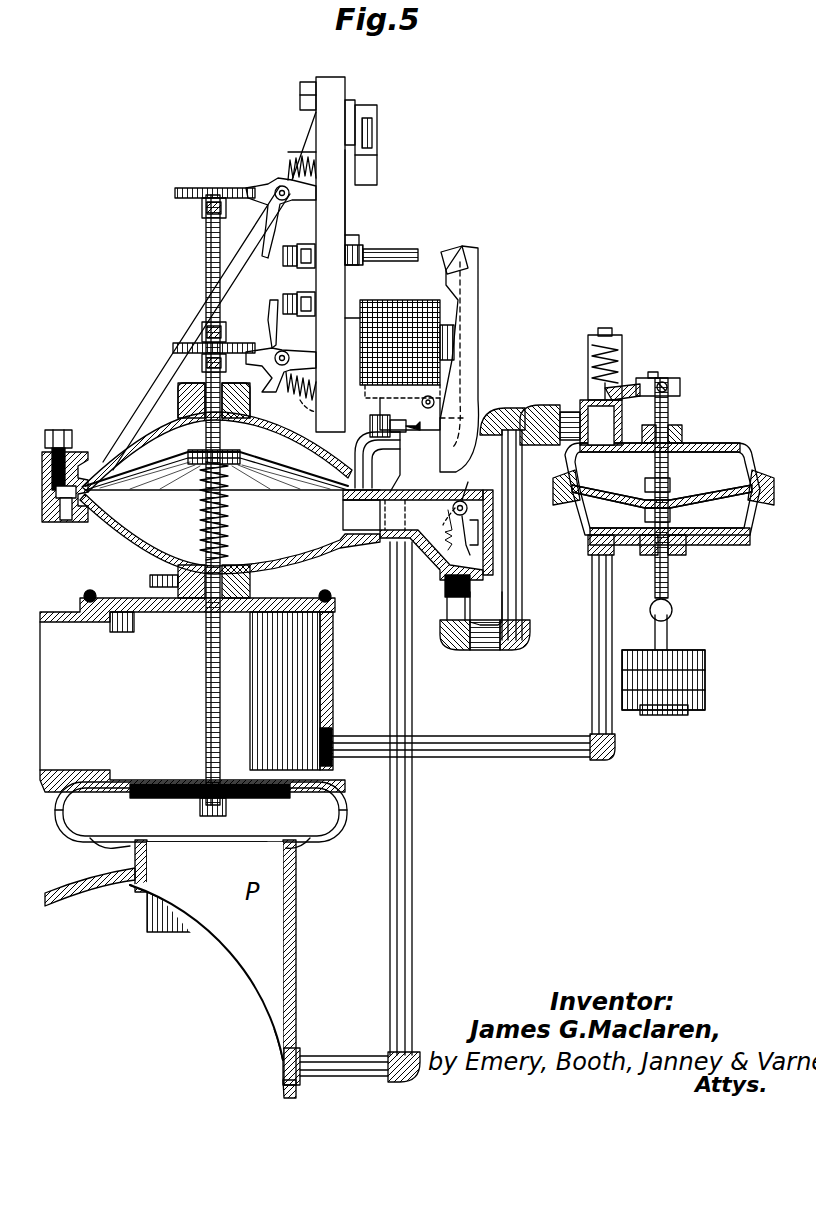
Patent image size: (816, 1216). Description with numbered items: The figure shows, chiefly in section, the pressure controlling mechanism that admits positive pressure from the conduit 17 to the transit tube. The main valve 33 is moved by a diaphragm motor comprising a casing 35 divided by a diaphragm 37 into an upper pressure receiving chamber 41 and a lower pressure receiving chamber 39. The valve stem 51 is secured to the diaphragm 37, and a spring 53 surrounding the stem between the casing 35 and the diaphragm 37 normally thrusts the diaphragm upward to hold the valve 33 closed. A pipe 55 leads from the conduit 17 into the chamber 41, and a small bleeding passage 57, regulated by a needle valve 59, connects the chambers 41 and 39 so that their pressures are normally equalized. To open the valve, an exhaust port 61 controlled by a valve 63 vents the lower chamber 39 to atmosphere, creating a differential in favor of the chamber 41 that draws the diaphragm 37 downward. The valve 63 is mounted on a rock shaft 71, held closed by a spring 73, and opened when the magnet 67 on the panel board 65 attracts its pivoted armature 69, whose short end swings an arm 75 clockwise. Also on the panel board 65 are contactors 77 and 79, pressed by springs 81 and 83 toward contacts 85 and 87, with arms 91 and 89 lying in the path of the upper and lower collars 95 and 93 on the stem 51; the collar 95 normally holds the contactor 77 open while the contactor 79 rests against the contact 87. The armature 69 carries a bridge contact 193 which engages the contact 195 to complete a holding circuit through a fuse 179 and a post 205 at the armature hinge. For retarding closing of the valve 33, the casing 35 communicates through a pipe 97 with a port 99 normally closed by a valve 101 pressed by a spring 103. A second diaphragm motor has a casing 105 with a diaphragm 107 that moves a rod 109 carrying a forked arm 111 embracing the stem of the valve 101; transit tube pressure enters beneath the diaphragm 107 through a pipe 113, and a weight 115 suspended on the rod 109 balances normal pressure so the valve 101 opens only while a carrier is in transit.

The pressure conduit 17 is at (90, 890).
The valve 33 is at (240, 798).
The casing 35 is at (122, 527).
The diaphragm 37 is at (130, 472).
The lower pressure receiving chamber 39 is at (174, 520).
The upper pressure receiving chamber 41 is at (216, 461).
The valve stem 51 is at (206, 645).
The spring 53 is at (228, 506).
The pipe 55 is at (413, 868).
The passage 57 is at (62, 520).
The needle valve 59 is at (57, 430).
The exhaust port 61 is at (493, 527).
The valve 63 is at (452, 548).
The panel board 65 is at (345, 216).
The magnet 67 is at (398, 300).
The pivoted armature 69 is at (478, 327).
The rock shaft 71 is at (464, 500).
The spring 73 is at (418, 535).
The arm 75 is at (455, 468).
The contactor 77 is at (248, 230).
The contactor 79 is at (286, 350).
The spring 81 is at (298, 158).
The spring 83 is at (296, 400).
The contact 85 is at (283, 250).
The contact 87 is at (297, 300).
The arm 89 is at (274, 340).
The arm 91 is at (262, 180).
The lower collar 93 is at (173, 349).
The upper collar 95 is at (175, 194).
The pipe 97 is at (524, 596).
The port 99 is at (620, 400).
The valve 101 is at (585, 400).
The spring 103 is at (622, 342).
The casing 105 is at (752, 470).
The diaphragm 107 is at (720, 500).
The rod 109 is at (670, 405).
The forked arm 111 is at (680, 381).
The pipe 113 is at (514, 758).
The weight 115 is at (705, 670).
The fuse 179 is at (377, 135).
The bridge contact 193 is at (455, 250).
The contact 195 is at (418, 252).
The post 205 is at (380, 420).